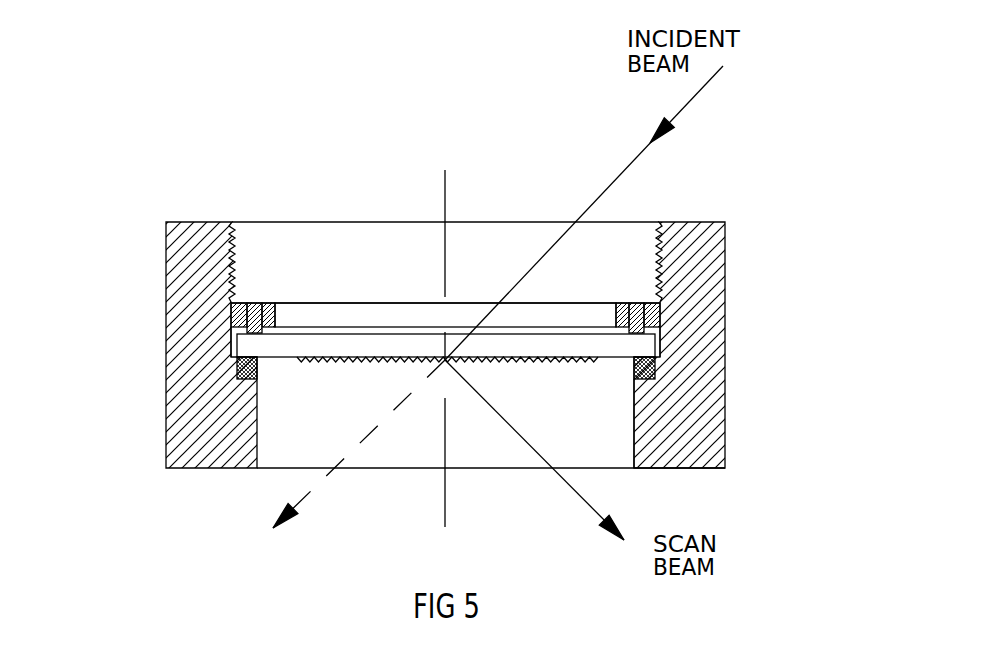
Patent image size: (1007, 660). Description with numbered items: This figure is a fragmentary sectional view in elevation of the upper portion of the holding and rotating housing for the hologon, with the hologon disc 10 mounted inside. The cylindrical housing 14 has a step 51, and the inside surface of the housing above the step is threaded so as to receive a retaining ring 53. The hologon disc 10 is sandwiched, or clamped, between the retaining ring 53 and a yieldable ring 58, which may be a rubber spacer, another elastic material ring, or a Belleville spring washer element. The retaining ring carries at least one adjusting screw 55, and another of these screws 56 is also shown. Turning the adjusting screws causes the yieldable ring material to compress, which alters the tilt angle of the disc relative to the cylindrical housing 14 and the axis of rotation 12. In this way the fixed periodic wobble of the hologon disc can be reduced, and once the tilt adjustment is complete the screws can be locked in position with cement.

The hologon disc 10 is at (393, 213).
The axis of rotation 12 is at (352, 271).
The cylindrical housing 14 is at (380, 294).
The step 51 is at (740, 423).
The retaining ring 53 is at (530, 226).
The adjusting screw 55 is at (544, 280).
The adjusting screw 56 is at (346, 376).
The yieldable ring 58 is at (369, 448).